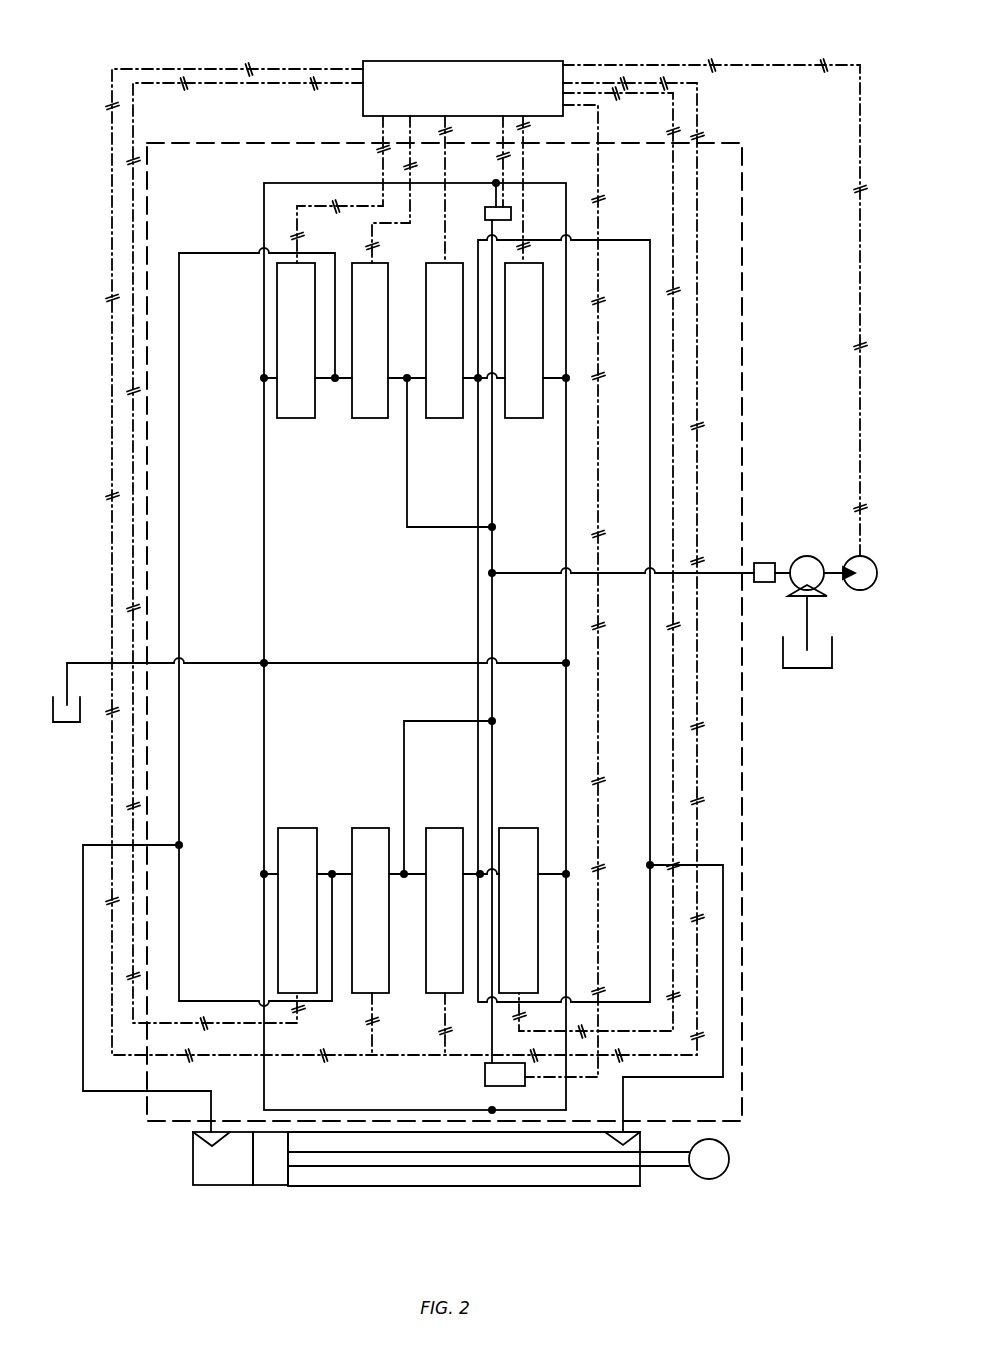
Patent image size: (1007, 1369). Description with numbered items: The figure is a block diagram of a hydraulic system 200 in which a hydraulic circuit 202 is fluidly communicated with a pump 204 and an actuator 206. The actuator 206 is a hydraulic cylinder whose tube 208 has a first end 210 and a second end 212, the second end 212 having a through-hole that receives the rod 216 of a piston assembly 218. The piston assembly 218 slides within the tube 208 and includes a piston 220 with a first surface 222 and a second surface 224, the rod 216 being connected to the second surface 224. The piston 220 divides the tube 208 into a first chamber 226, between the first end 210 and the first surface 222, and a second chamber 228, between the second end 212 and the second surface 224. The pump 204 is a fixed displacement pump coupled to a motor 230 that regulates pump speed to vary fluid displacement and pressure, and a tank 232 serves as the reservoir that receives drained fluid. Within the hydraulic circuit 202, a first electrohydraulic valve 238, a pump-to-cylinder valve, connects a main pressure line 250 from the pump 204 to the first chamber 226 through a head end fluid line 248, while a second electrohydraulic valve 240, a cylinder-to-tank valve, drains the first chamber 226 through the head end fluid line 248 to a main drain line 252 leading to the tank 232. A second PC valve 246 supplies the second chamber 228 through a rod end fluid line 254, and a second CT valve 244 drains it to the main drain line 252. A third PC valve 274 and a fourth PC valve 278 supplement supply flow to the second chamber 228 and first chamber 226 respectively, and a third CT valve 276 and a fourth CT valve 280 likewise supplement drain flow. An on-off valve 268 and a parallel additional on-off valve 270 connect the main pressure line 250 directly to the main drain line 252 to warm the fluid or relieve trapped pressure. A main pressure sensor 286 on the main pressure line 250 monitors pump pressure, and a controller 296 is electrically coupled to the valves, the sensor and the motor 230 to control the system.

The hydraulic system 200 is at (96, 66).
The hydraulic circuit 202 is at (745, 265).
The pump 204 is at (808, 556).
The actuator 206 is at (712, 1193).
The tube 208 is at (464, 1169).
The first end 210 is at (174, 1190).
The second end 212 is at (643, 1135).
The rod 216 is at (562, 1168).
The piston assembly 218 is at (308, 1143).
The piston 220 is at (263, 1150).
The first surface 222 is at (247, 1170).
The second surface 224 is at (293, 1187).
The first chamber 226 is at (215, 1160).
The second chamber 228 is at (420, 1182).
The motor 230 is at (862, 592).
The tank 232 is at (53, 713).
The first electrohydraulic valve 238 is at (370, 418).
The second electrohydraulic valve 240 is at (296, 418).
The second CT valve 244 is at (524, 418).
The second PC valve 246 is at (445, 418).
The head end fluid line 248 is at (83, 895).
The main pressure line 250 is at (496, 558).
The main drain line 252 is at (100, 663).
The rod end fluid line 254 is at (723, 900).
The on-off valve 268 is at (510, 207).
The additional on-off valve 270 is at (485, 1078).
The third PC valve 274 is at (445, 828).
The third CT valve 276 is at (519, 828).
The fourth PC valve 278 is at (368, 828).
The fourth CT valve 280 is at (293, 828).
The main pressure sensor 286 is at (766, 563).
The controller 296 is at (403, 569).